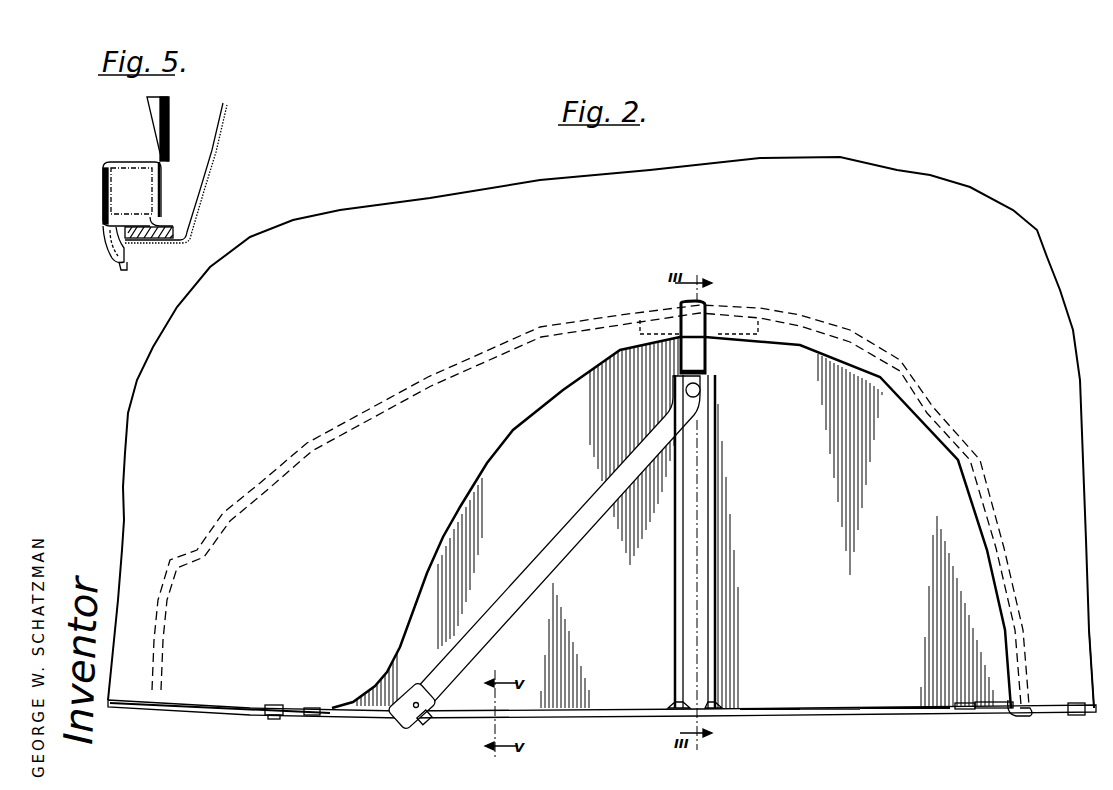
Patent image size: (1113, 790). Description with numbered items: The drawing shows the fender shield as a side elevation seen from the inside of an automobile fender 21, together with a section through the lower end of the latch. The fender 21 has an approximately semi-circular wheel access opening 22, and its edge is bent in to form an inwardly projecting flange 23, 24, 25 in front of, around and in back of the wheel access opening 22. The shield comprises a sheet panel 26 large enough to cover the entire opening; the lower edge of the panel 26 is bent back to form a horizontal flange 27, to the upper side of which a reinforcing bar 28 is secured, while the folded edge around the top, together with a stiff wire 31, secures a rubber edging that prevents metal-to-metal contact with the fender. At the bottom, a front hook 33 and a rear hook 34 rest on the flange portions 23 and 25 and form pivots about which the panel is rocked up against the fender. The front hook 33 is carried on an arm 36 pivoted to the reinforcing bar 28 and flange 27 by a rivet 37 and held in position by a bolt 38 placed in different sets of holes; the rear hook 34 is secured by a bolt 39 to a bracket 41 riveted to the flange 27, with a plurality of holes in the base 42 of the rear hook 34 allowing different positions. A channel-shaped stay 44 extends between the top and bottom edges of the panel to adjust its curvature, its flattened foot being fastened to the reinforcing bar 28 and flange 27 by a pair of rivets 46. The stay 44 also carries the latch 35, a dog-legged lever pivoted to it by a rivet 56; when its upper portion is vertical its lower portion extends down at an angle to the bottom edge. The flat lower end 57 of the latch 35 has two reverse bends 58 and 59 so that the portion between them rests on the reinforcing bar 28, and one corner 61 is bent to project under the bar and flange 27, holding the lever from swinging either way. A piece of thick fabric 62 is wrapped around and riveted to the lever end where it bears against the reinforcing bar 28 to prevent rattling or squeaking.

In FIG. 2, the automobile fender 21 is at (1076, 396).
In FIG. 2, the wheel access opening 22 is at (960, 474).
In FIG. 2, the inwardly projecting flange 23 is at (1093, 714).
In FIG. 2, the inwardly projecting flange 24 is at (995, 556).
In FIG. 2, the inwardly projecting flange 25 is at (130, 708).
In FIG. 5, the sheet panel 26 is at (223, 133).
In FIG. 2, the sheet panel 26 is at (855, 693).
In FIG. 5, the horizontal flange 27 is at (150, 241).
In FIG. 2, the horizontal flange 27 is at (808, 715).
In FIG. 5, the reinforcing bar 28 is at (168, 225).
In FIG. 2, the reinforcing bar 28 is at (775, 715).
In FIG. 2, the stiff wire 31 is at (1010, 518).
In FIG. 2, the front hook 33 is at (1072, 715).
In FIG. 2, the rear hook 34 is at (262, 708).
In FIG. 5, the latch 35 is at (170, 106).
In FIG. 2, the latch 35 is at (565, 549).
In FIG. 2, the arm 36 is at (1013, 708).
In FIG. 2, the rivet 37 is at (963, 714).
In FIG. 2, the bolt 38 is at (1000, 714).
In FIG. 2, the bolt 39 is at (273, 719).
In FIG. 2, the bracket 41 is at (283, 716).
In FIG. 2, the base 42 is at (315, 715).
In FIG. 2, the stay 44 is at (673, 632).
In FIG. 2, the rivets 46 is at (714, 716).
In FIG. 2, the rivet 56 is at (706, 393).
In FIG. 5, the lower end 57 is at (103, 174).
In FIG. 2, the lower end 57 is at (398, 716).
In FIG. 5, the reverse bend 58 is at (147, 162).
In FIG. 5, the reverse bend 59 is at (103, 202).
In FIG. 5, the corner 61 is at (122, 271).
In FIG. 2, the corner 61 is at (425, 723).
In FIG. 5, the thick fabric 62 is at (103, 252).